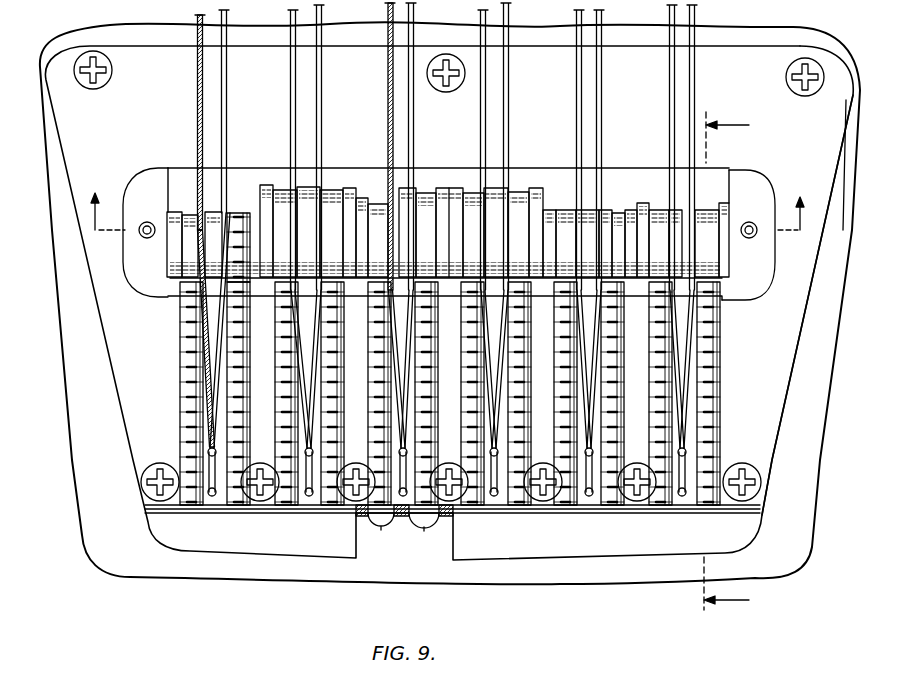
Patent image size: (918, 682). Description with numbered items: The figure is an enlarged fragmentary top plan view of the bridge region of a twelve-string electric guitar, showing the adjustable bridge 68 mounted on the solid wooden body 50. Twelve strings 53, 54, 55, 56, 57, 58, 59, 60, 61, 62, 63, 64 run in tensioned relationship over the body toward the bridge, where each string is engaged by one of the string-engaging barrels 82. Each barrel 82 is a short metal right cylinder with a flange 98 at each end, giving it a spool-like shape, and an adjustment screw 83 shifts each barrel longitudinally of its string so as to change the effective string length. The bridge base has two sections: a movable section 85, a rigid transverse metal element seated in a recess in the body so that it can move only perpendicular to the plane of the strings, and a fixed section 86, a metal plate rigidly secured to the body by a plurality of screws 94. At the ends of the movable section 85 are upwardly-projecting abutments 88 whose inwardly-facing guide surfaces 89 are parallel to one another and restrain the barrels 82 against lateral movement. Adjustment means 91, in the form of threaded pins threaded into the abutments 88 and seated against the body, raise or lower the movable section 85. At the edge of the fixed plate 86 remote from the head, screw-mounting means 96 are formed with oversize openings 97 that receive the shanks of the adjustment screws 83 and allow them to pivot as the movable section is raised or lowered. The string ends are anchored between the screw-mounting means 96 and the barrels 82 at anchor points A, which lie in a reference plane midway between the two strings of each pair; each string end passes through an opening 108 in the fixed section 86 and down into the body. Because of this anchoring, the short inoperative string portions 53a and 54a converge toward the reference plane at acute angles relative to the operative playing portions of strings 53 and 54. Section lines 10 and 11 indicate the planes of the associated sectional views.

The section line 10- 10 is at (449, 200).
The section line 11- 11 is at (740, 362).
The guitar body 50 is at (803, 550).
The string 53 is at (169, 231).
The inoperative string portion 53a is at (199, 336).
The string 54 is at (199, 229).
The inoperative string portion 54a is at (220, 372).
The string 55 is at (293, 118).
The string 56 is at (322, 112).
The string 57 is at (389, 68).
The string 58 is at (414, 97).
The string 59 is at (481, 114).
The string 60 is at (511, 124).
The string 61 is at (577, 76).
The string 62 is at (606, 108).
The string 63 is at (672, 132).
The string 64 is at (697, 80).
The adjustable bridge 68 is at (125, 463).
The string-engaging barrel 82 is at (185, 256).
The adjustment screw 83 is at (240, 213).
The movable bridge section 85 is at (185, 172).
The fixed bridge section 86 is at (774, 424).
The abutment 88 is at (140, 278).
The guide surface 89 is at (172, 170).
The adjustment means 91 is at (149, 222).
The screw 94 is at (440, 53).
The screw-mounting means 96 is at (441, 520).
The oversize opening 97 is at (372, 520).
The flange 98 is at (213, 212).
The opening 108 is at (208, 450).
The anchor point A is at (234, 451).